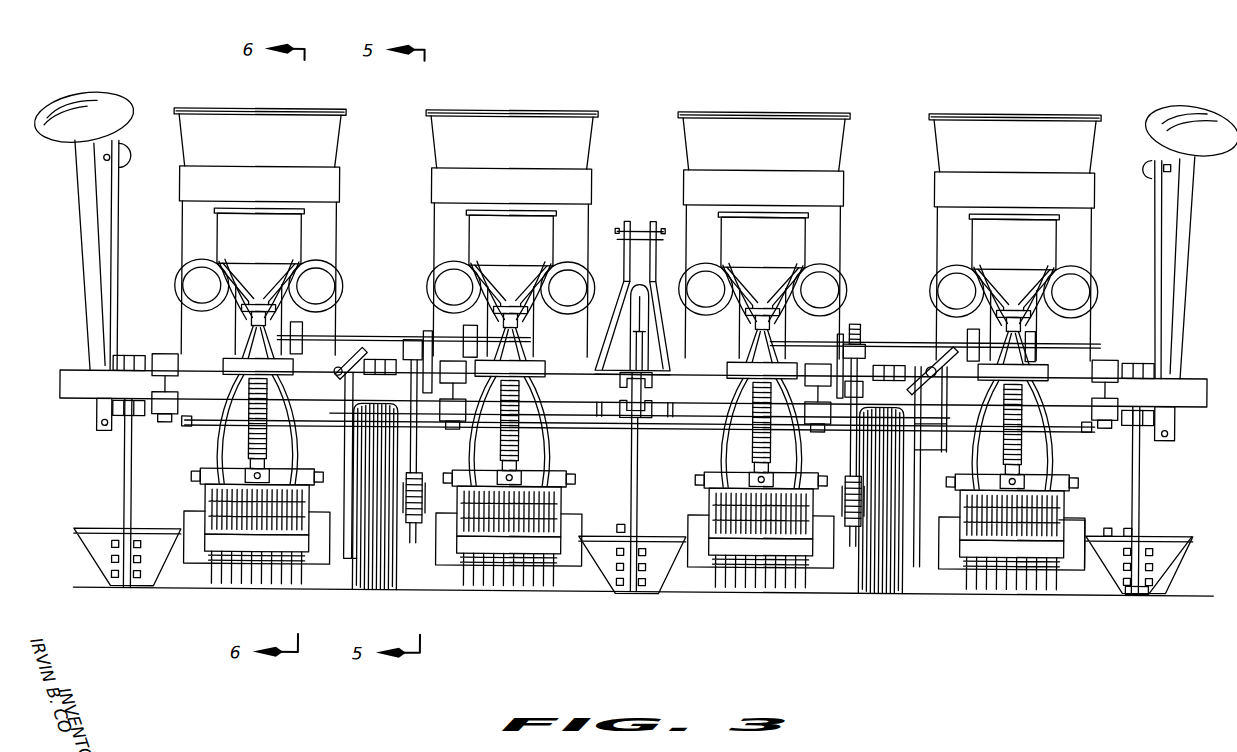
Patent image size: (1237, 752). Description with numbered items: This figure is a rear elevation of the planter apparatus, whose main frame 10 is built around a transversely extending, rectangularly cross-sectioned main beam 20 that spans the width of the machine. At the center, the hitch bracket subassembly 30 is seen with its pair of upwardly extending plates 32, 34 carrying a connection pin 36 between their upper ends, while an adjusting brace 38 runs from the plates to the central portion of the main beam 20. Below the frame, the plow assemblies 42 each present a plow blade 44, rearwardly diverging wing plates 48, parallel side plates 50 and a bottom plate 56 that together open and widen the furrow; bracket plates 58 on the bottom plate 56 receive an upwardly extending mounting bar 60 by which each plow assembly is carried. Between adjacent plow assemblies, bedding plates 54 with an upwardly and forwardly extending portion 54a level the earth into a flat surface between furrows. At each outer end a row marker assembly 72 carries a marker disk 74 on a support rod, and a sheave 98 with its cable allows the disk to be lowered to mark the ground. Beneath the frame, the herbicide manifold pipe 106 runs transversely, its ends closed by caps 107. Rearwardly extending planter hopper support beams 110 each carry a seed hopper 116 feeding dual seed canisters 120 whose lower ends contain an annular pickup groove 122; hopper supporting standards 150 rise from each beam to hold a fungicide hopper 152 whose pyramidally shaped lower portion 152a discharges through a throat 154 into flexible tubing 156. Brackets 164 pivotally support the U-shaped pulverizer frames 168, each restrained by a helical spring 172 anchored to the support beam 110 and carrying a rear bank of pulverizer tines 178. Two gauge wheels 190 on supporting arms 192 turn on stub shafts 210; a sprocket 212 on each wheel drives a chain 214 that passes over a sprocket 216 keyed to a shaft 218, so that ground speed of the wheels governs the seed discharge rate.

The main frame 10 is at (698, 382).
The main beam 20 is at (1188, 376).
The central hitch bracket subassembly 30 is at (633, 301).
The plate 32 is at (606, 332).
The plate 34 is at (656, 330).
The connection pin 36 is at (625, 216).
The adjusting brace 38 is at (628, 296).
The plow assembly 42 is at (120, 460).
The plow blade 44 is at (634, 590).
The wing plate 48 is at (678, 572).
The side plate 50 is at (1165, 586).
The bedding plate 54 is at (562, 566).
The upwardly and forwardly extending portion 54a is at (1070, 520).
The bottom plate 56 is at (1128, 588).
The bracket plate 58 is at (646, 540).
The mounting bar 60 is at (638, 458).
The row marker assembly 72 is at (78, 224).
The marker disk 74 is at (92, 104).
The sheave 98 is at (124, 154).
The herbicide manifold pipe 106 is at (566, 424).
The cap 107 is at (184, 422).
The planter hopper support beam 110 is at (228, 362).
The seed hopper 116 is at (276, 148).
The seed canister 120 is at (211, 239).
The annular pickup groove 122 is at (184, 292).
The hopper supporting standard 150 is at (238, 330).
The fungicide hopper 152 is at (274, 245).
The pyramidally shaped lower portion 152a is at (276, 281).
The throat 154 is at (510, 295).
The flexible tubing 156 is at (478, 450).
The bracket 164 is at (560, 476).
The pulverizer frame 168 is at (214, 540).
The helical spring 172 is at (245, 440).
The pulverizer tines 178 is at (466, 575).
The gauge wheel 190 is at (374, 580).
The gauge wheel supporting arm 192 is at (338, 456).
The stub shaft 210 is at (404, 518).
The sprocket 212 is at (418, 522).
The drive chain 214 is at (848, 430).
The sprocket 216 is at (864, 334).
The shaft 218 is at (320, 338).